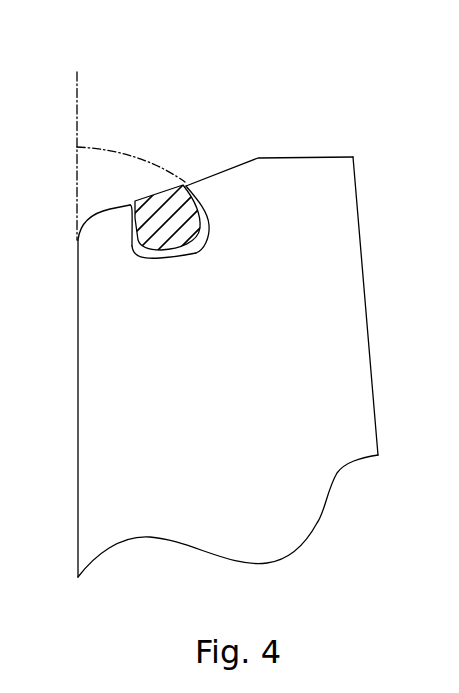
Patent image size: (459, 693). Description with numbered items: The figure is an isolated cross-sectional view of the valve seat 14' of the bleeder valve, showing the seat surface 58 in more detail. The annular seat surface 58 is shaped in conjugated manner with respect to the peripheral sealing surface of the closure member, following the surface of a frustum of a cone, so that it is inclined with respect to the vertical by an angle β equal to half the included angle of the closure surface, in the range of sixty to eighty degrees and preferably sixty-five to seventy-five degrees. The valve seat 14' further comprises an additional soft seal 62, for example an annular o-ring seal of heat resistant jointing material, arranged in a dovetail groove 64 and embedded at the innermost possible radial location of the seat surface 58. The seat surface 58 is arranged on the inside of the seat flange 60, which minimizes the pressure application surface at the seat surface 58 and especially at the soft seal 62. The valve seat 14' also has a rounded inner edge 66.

The valve seat 14' is at (269, 107).
The seat surface 58 is at (191, 181).
The seat flange 60 is at (277, 505).
The soft seal 62 is at (188, 248).
The dovetail groove 64 is at (208, 220).
The rounded inner edge 66 is at (72, 232).